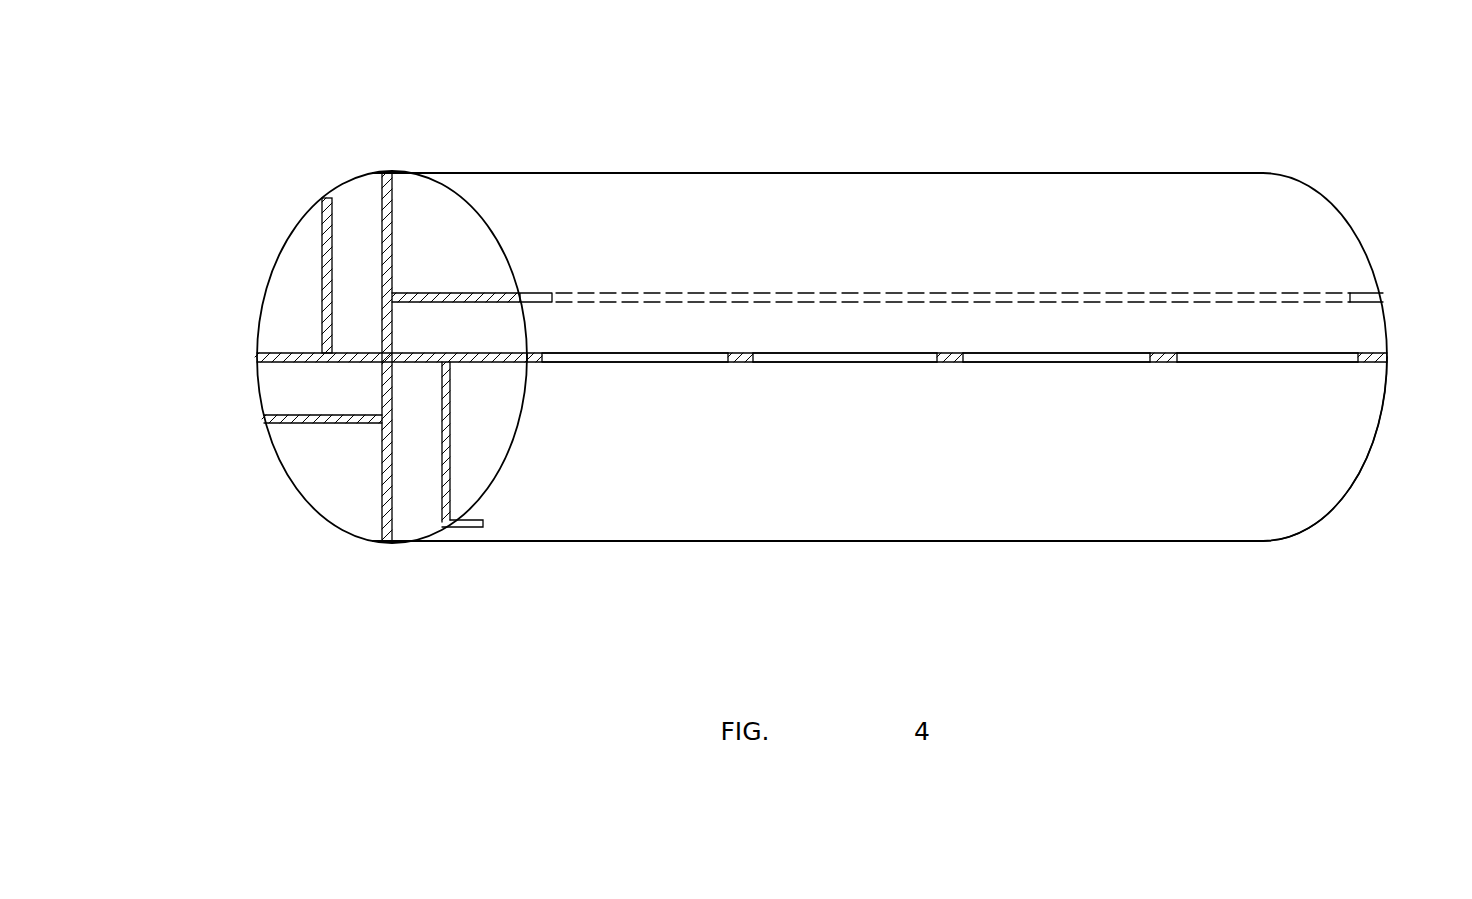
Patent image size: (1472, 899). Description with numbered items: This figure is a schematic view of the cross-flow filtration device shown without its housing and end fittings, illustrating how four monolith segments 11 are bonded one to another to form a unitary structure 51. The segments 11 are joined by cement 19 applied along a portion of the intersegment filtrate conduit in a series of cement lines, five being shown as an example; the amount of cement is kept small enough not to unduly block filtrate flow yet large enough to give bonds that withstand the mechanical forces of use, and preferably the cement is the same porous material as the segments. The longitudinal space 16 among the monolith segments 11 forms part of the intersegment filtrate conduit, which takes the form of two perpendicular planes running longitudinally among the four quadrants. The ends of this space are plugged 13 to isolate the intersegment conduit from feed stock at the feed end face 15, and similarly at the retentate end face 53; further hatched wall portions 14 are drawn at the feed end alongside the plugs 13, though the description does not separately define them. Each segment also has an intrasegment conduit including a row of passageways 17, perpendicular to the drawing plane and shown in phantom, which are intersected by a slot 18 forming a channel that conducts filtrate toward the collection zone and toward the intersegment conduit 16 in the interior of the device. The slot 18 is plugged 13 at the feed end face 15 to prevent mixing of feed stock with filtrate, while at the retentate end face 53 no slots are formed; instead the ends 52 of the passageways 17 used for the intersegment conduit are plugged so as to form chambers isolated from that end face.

The monolith segment 11 is at (262, 258).
The plug 13 is at (452, 353).
The partition wall 14 is at (322, 265).
The feed end face 15 is at (217, 352).
The longitudinal space 16 is at (640, 362).
The passageways 17 is at (878, 293).
The slot 18 is at (525, 293).
The cement 19 is at (528, 362).
The unitary structure 51 is at (775, 148).
The ends of the passageways 52 is at (1363, 293).
The retentate end face 53 is at (1352, 483).